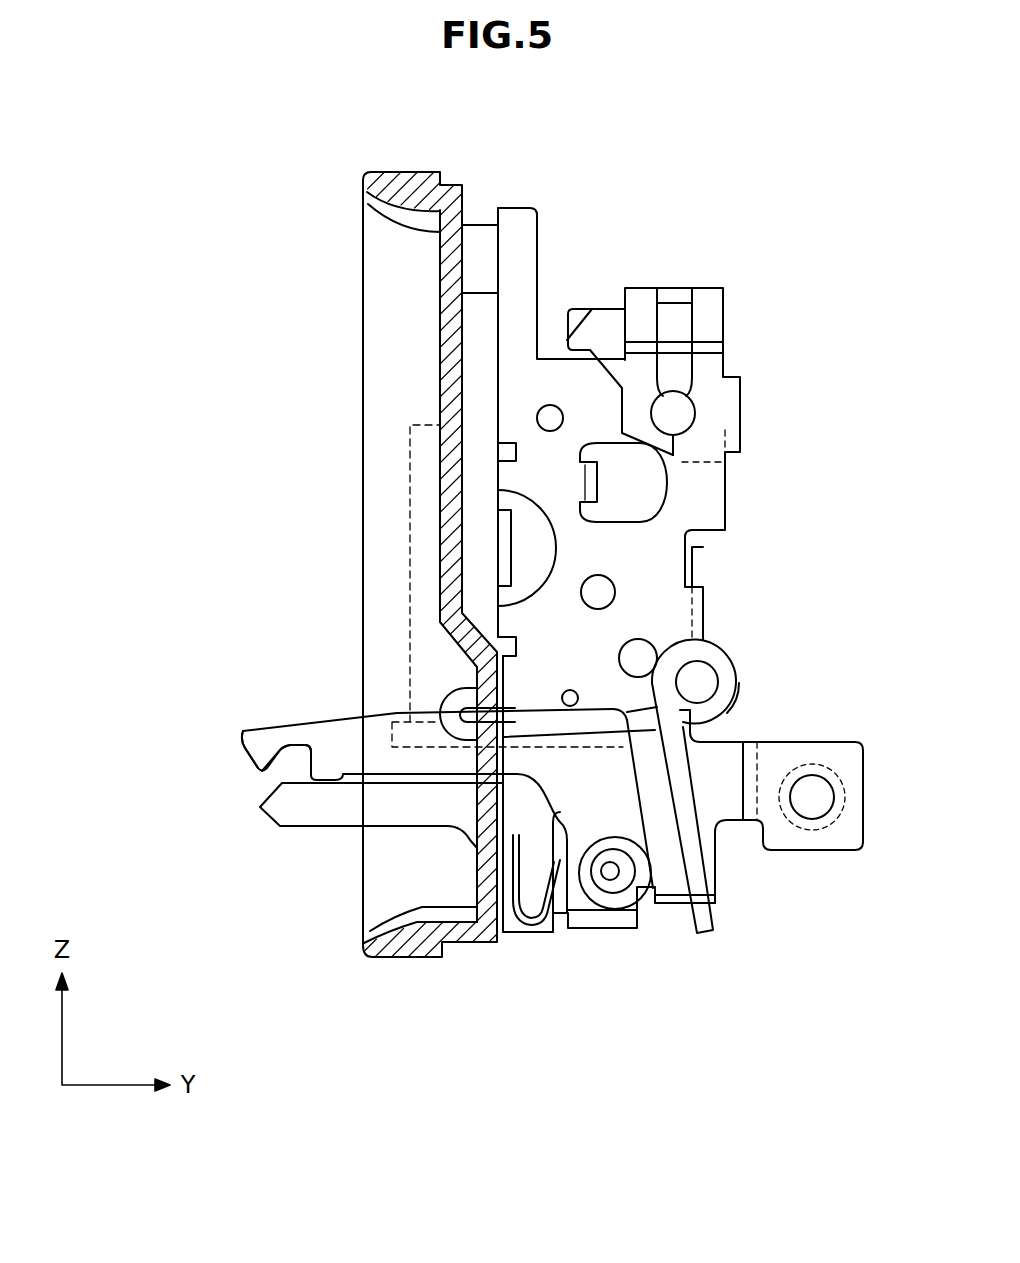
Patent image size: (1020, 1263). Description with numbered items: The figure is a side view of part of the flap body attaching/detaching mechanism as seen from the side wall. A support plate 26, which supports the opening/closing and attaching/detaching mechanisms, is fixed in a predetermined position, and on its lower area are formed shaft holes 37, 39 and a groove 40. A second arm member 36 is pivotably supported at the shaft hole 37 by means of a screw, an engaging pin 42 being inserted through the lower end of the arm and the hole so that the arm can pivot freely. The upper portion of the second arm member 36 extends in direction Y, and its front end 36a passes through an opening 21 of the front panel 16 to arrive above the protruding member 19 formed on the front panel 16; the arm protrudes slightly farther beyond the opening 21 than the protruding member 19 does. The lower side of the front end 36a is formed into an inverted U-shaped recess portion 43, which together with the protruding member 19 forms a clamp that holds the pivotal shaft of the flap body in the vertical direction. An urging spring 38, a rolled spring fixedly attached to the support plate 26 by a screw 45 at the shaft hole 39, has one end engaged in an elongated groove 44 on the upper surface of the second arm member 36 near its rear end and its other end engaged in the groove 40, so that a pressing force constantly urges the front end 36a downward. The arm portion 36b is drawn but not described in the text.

The front panel 16 is at (452, 323).
The protruding member 19 is at (322, 807).
The opening 21 is at (470, 757).
The support plate 26 is at (693, 500).
The second arm member 36 is at (330, 732).
The front end 36a is at (252, 728).
The lever arm 36b is at (610, 760).
The shaft hole 37 is at (620, 878).
The urging spring 38 is at (713, 642).
The shaft hole 39 is at (712, 663).
The groove 40 is at (723, 897).
The engaging pin 42 is at (605, 872).
The inverted U-shaped recess portion 43 is at (290, 765).
The elongated groove 44 is at (395, 703).
The screw 45 is at (710, 700).